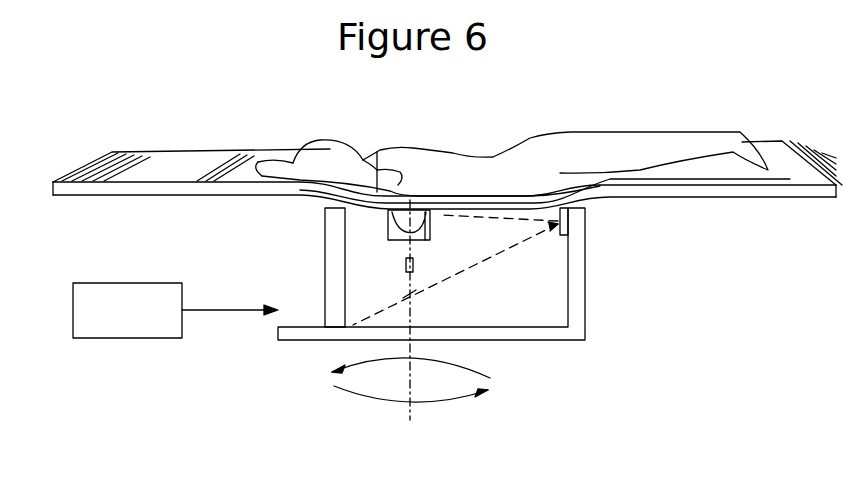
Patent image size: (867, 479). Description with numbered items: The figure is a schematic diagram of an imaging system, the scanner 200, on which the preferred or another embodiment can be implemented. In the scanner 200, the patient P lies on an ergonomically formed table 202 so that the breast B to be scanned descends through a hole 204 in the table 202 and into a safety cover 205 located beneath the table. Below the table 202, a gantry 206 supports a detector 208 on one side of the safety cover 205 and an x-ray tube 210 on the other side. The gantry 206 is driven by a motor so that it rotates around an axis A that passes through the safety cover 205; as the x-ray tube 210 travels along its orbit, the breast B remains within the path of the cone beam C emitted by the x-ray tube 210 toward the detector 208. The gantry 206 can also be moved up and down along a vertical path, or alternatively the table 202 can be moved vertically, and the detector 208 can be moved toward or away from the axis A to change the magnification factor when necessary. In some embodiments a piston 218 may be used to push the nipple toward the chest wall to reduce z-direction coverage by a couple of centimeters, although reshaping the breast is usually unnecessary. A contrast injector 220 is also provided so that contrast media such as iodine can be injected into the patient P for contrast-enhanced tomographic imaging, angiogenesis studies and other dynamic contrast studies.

The scanner 200 is at (83, 228).
The table 202 is at (192, 152).
The hole 204 is at (377, 152).
The safety cover 205 is at (388, 222).
The gantry 206 is at (540, 340).
The detector 208 is at (325, 255).
The x-ray tube 210 is at (560, 236).
The piston 218 is at (406, 264).
The contrast injector 220 is at (182, 332).
The patient P is at (546, 140).
The axis A is at (410, 406).
The breast B is at (430, 238).
The cone beam C is at (466, 268).